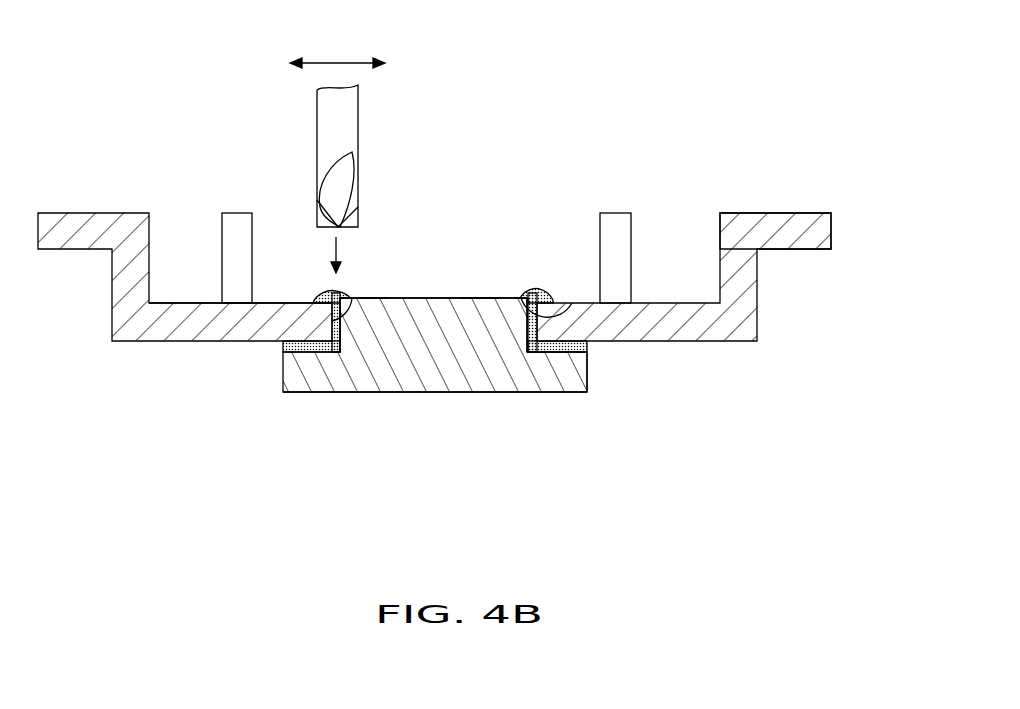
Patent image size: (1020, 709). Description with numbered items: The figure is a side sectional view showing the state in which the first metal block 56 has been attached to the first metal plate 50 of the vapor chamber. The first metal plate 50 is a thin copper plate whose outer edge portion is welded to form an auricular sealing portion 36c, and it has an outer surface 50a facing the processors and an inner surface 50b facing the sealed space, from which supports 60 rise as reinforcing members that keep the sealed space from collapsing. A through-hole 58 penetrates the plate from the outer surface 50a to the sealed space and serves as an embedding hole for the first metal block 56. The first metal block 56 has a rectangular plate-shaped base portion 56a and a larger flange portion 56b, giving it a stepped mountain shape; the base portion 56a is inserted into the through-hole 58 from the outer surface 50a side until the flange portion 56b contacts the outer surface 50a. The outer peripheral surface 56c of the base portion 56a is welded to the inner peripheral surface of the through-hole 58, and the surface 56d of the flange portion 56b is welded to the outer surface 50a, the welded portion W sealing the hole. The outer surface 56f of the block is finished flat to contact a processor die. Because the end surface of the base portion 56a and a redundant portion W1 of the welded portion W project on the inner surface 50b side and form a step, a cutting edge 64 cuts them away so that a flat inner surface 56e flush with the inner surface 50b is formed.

The sealing portion 36c is at (822, 238).
The first metal plate 50 is at (153, 341).
The outer surface of the first metal plate 50a is at (658, 341).
The inner surface of the first metal plate 50b is at (266, 303).
The first metal block 56 is at (400, 392).
The base portion 56a is at (428, 298).
The flange portion 56b is at (565, 383).
The outer peripheral surface of the base portion 56c is at (573, 299).
The surface of the flange portion 56d is at (306, 352).
The inner surface of the metal block 56e is at (477, 298).
The outer surface of the metal block 56f is at (465, 393).
The through-hole 58 is at (374, 299).
The support 60 is at (233, 218).
The cutting edge 64 is at (352, 116).
The welded portion W is at (329, 352).
The redundant portion of the welded portion W1 is at (326, 292).